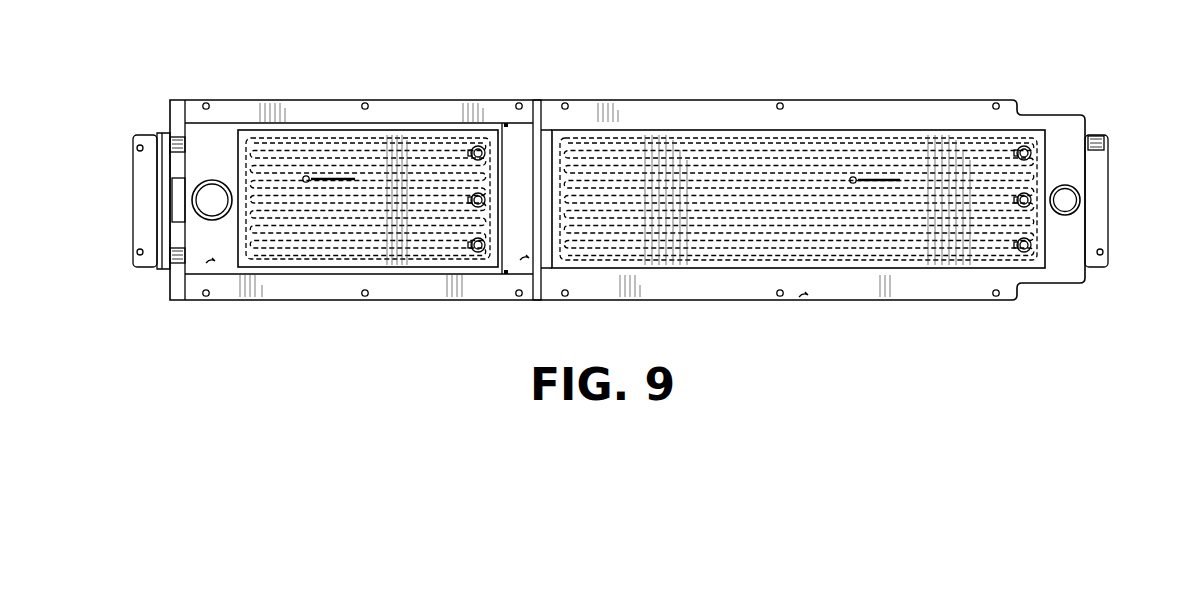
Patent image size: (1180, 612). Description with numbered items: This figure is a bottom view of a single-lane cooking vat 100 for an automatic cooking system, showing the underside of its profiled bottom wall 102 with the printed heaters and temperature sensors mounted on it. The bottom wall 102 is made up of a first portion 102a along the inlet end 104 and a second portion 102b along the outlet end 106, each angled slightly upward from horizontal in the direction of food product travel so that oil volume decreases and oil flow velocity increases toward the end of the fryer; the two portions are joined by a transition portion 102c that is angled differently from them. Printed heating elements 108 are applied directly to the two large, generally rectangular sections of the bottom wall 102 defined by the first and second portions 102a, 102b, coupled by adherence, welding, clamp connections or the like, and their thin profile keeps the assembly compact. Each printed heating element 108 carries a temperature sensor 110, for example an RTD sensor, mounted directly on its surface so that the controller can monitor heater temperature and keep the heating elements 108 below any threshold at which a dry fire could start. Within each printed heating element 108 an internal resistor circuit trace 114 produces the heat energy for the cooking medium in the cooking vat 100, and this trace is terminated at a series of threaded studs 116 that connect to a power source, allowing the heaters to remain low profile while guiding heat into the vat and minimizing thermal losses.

The cooking vat 100 is at (645, 210).
The bottom wall 102 is at (658, 112).
The first portion of the bottom wall 102a is at (804, 297).
The second portion of the bottom wall 102b is at (211, 263).
The transition portion of the bottom wall 102c is at (525, 261).
The inlet end 104 is at (1086, 197).
The outlet end 106 is at (178, 158).
The printed heating element 108 is at (641, 212).
The temperature sensor 110 is at (306, 184).
The resistor circuit trace 114 is at (428, 218).
The threaded studs 116 is at (485, 245).